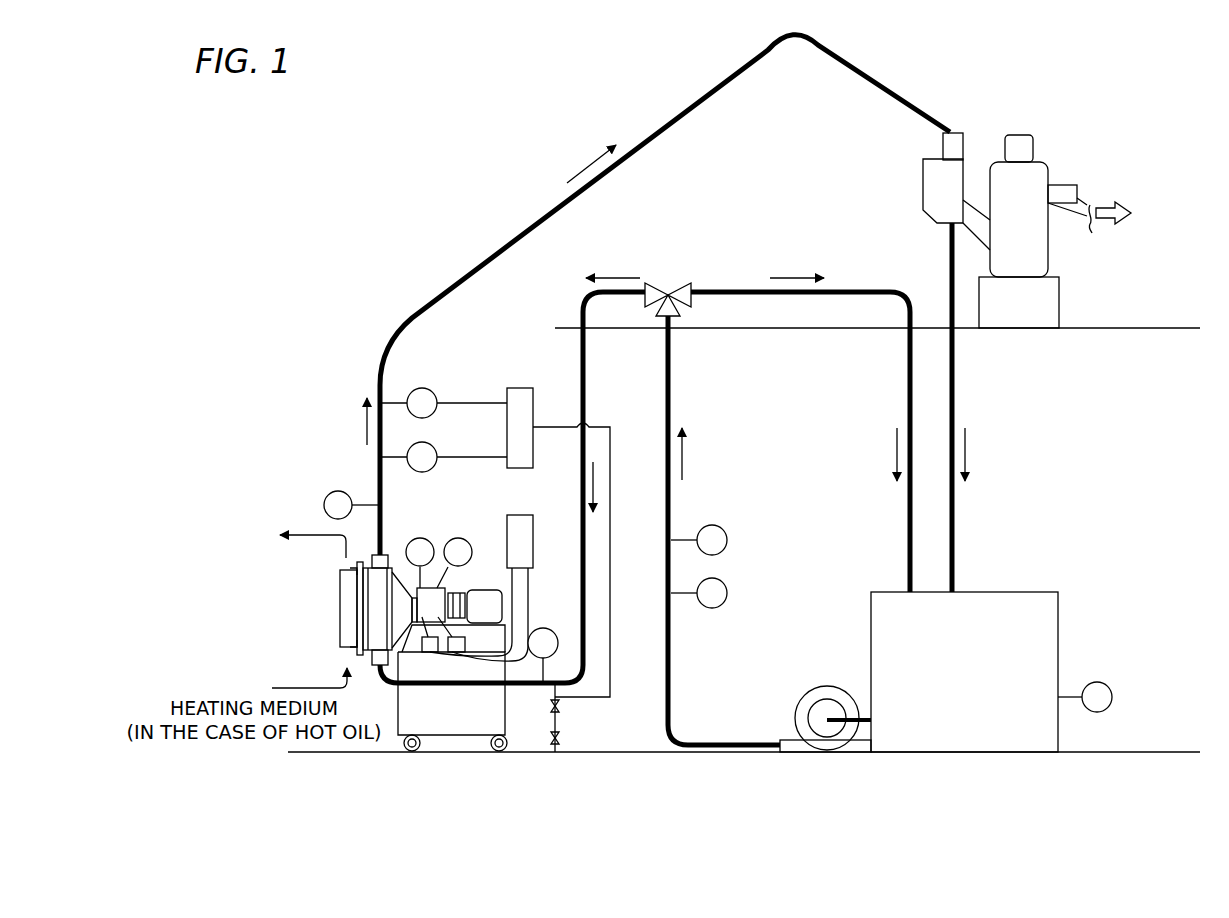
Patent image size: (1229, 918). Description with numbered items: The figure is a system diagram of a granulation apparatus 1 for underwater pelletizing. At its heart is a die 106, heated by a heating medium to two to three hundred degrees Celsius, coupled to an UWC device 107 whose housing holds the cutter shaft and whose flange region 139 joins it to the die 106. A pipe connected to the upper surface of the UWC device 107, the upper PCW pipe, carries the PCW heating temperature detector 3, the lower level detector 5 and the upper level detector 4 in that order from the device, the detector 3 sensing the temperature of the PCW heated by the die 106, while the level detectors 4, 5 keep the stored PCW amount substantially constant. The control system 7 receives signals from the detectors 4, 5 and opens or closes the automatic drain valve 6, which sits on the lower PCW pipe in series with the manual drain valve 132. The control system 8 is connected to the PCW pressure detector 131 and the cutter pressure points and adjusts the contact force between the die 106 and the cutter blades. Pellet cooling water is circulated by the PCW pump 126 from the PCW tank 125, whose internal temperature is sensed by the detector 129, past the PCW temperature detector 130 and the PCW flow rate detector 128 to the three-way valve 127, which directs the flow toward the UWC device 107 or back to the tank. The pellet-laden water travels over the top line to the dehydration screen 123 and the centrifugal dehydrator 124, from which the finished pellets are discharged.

The granulation apparatus 1 is at (1102, 90).
The PCW heating temperature detector 3 is at (338, 490).
The upper level detector 4 is at (422, 388).
The lower level detector 5 is at (422, 473).
The automatic drain valve 6 is at (560, 706).
The control system (first control unit) 7 is at (525, 388).
The control system (second control unit) 8 is at (507, 515).
The die 106 is at (340, 600).
The UWC device 107 is at (367, 757).
The dehydration screen 123 is at (923, 186).
The centrifugal dehydrator 124 is at (1048, 250).
The PCW tank 125 is at (1058, 628).
The PCW pump 126 is at (795, 722).
The three-way valve 127 is at (674, 280).
The PCW flow rate detector 128 is at (712, 524).
The detector for internal temperature of the PCW tank 129 is at (1113, 697).
The PCW temperature detector 130 is at (712, 609).
The PCW pressure detector 131 is at (548, 628).
The manual drain valve 132 is at (560, 740).
The flange 139 is at (392, 573).